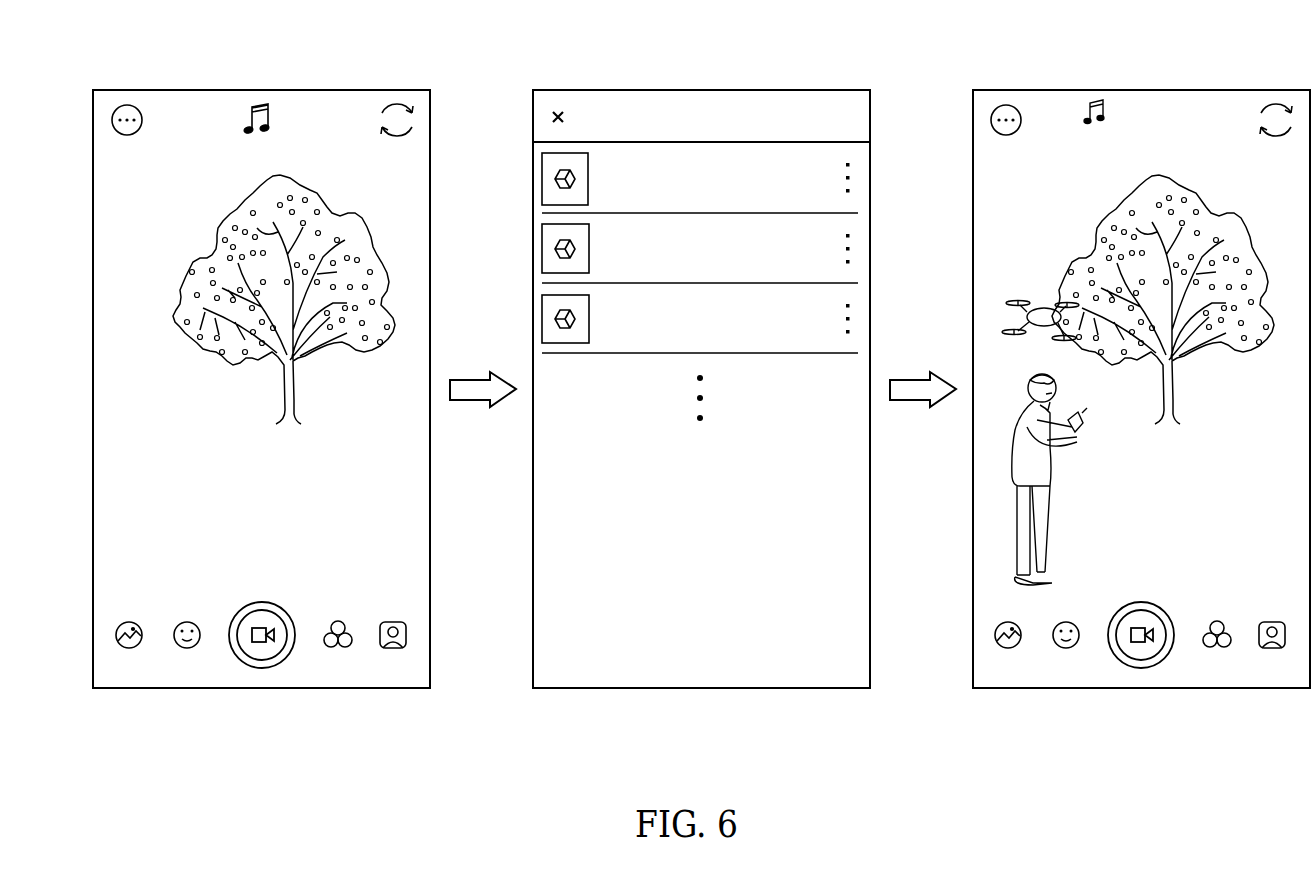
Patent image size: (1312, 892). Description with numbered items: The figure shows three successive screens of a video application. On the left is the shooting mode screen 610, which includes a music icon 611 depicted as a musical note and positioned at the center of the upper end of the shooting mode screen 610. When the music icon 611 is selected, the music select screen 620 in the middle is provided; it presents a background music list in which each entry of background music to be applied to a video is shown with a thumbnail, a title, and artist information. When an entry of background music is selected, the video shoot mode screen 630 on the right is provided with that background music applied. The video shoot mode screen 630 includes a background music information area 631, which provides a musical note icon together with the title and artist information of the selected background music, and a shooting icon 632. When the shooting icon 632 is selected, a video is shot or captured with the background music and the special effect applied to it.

The shooting mode screen 610 is at (261, 360).
The music icon 611 is at (262, 102).
The music select screen 620 is at (837, 88).
The video shoot mode screen 630 is at (1141, 360).
The background music information area 631 is at (1153, 102).
The shooting icon 632 is at (1142, 602).